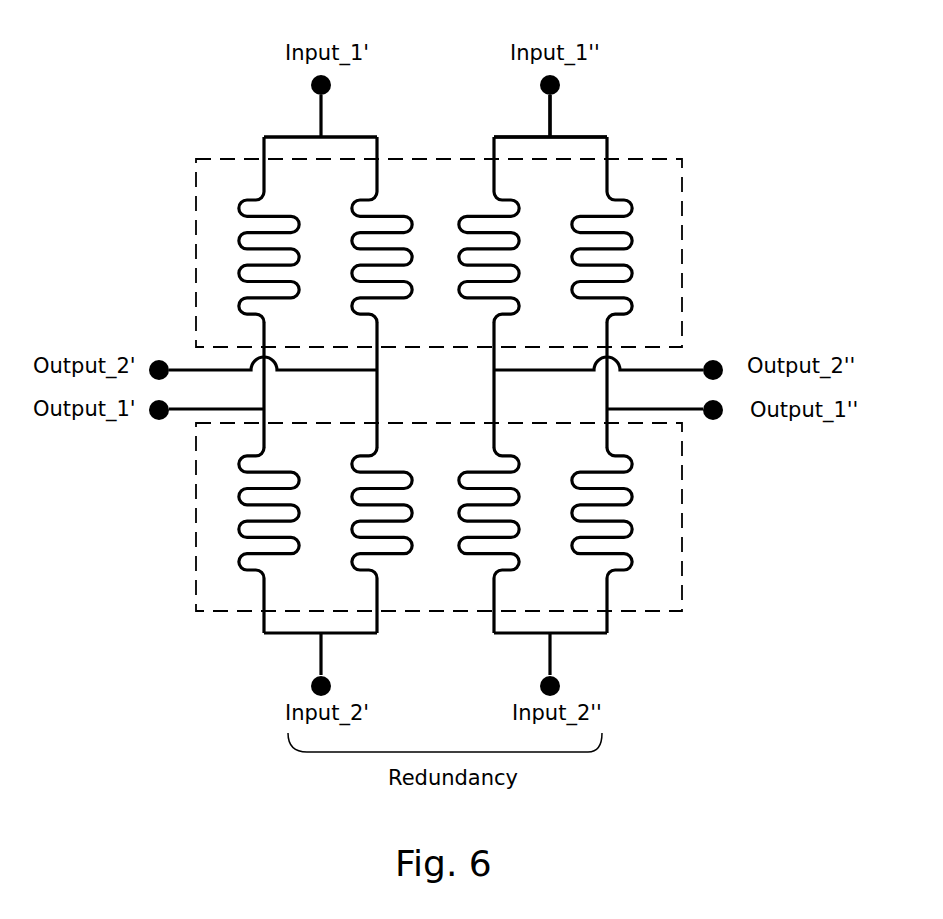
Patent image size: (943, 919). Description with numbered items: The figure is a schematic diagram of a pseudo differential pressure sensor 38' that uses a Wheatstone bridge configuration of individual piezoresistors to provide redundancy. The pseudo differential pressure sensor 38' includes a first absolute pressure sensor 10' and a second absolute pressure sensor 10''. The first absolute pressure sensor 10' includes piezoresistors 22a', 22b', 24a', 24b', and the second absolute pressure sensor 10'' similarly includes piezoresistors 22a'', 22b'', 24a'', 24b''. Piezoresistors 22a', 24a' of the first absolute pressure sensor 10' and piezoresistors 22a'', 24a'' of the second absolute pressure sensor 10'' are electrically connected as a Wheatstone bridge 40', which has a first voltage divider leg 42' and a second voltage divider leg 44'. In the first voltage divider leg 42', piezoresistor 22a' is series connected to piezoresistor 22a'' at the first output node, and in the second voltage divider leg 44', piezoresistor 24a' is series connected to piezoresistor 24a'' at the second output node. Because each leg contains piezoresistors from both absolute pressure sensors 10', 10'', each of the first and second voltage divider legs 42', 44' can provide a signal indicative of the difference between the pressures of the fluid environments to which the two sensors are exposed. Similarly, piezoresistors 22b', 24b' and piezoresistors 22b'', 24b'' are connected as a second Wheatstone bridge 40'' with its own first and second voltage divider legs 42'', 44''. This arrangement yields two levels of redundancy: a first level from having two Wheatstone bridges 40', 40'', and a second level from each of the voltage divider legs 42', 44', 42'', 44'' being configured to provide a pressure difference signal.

The first absolute pressure sensor 10' is at (497, 253).
The second absolute pressure sensor 10'' is at (499, 517).
The piezoresistor 22a' is at (193, 229).
The piezoresistor 22a'' is at (193, 540).
The piezoresistor 22b' is at (626, 221).
The piezoresistor 22b'' is at (656, 556).
The piezoresistor 24a' is at (407, 229).
The piezoresistor 24a'' is at (391, 573).
The piezoresistor 24b' is at (467, 221).
The piezoresistor 24b'' is at (480, 557).
The pseudo differential pressure sensor 38' is at (596, 75).
The Wheatstone bridge 40' is at (272, 79).
The Wheatstone bridge 40'' is at (524, 79).
The first voltage divider leg 42' is at (196, 407).
The first voltage divider leg 42'' is at (567, 385).
The second voltage divider leg 44' is at (338, 385).
The second voltage divider leg 44'' is at (456, 385).